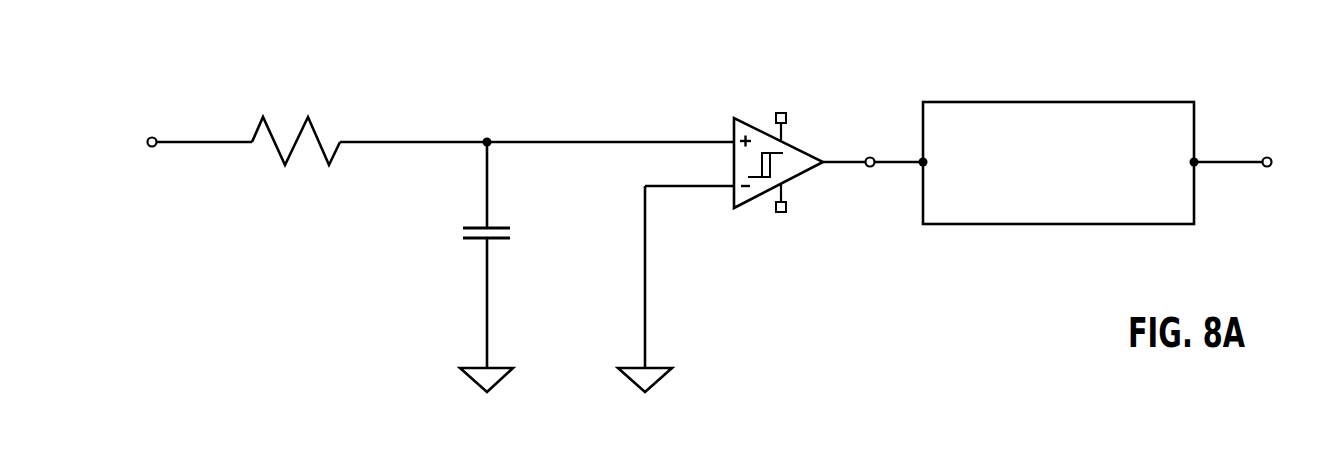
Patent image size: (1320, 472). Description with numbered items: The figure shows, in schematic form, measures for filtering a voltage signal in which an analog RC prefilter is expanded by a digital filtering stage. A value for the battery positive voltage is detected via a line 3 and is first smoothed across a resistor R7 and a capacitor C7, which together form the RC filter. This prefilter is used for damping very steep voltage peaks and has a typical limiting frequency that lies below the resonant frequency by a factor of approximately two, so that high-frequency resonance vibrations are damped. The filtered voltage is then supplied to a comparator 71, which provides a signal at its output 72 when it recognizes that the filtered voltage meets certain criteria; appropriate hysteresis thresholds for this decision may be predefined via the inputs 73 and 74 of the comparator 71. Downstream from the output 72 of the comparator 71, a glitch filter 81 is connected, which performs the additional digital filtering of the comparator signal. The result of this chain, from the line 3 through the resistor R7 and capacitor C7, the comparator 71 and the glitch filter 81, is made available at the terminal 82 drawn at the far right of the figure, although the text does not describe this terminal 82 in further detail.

The line 3 is at (180, 142).
The resistor R7 is at (296, 122).
The capacitor C7 is at (492, 265).
The comparator 71 is at (744, 206).
The output 72 is at (869, 168).
The input 73 is at (781, 111).
The input 74 is at (781, 214).
The glitch filter 81 is at (1058, 225).
The output terminal 82 is at (1240, 165).